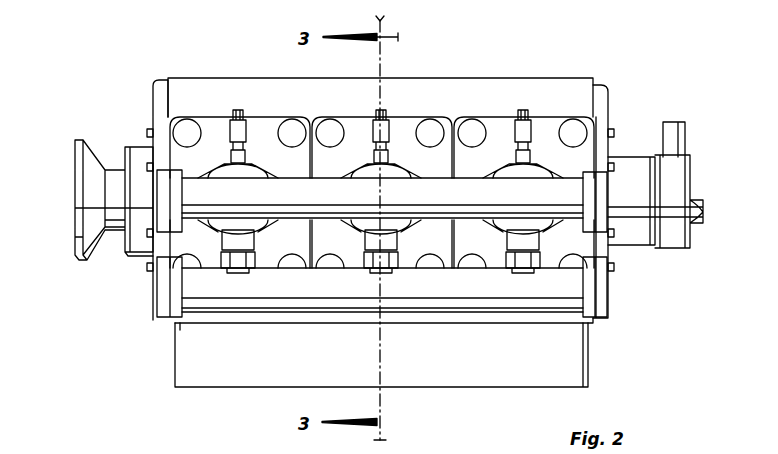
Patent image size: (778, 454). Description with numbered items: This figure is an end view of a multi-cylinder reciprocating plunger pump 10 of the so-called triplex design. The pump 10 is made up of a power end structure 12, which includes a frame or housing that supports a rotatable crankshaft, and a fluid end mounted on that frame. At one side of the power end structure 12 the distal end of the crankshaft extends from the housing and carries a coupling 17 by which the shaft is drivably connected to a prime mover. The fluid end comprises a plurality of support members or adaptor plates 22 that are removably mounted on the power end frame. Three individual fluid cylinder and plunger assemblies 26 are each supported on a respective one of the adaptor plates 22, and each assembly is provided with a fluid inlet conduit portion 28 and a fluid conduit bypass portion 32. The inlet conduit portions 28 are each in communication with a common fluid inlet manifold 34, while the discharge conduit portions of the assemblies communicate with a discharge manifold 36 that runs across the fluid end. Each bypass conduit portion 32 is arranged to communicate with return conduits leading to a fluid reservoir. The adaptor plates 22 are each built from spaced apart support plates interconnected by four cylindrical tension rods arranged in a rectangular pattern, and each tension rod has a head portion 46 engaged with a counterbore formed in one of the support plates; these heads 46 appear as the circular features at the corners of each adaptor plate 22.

The multi-cylinder reciprocating plunger pump 10 is at (521, 40).
The power end structure 12 is at (543, 52).
The coupling 17 is at (83, 256).
The adaptor plate 22 is at (215, 115).
The fluid cylinder and plunger assembly 26 is at (268, 235).
The fluid inlet conduit portion 28 is at (222, 243).
The fluid conduit bypass portion 32 is at (252, 132).
The fluid inlet manifold 34 is at (455, 298).
The discharge manifold 36 is at (316, 187).
The head portion 46 is at (328, 118).